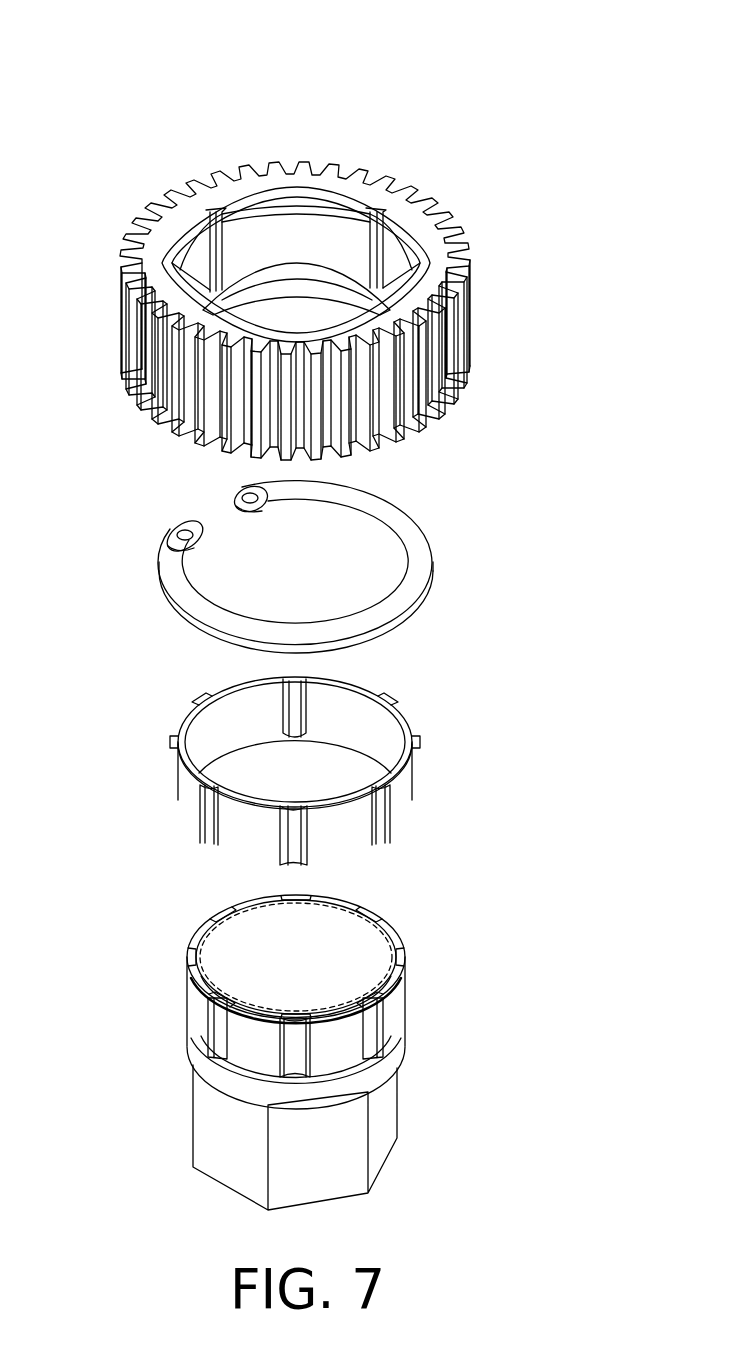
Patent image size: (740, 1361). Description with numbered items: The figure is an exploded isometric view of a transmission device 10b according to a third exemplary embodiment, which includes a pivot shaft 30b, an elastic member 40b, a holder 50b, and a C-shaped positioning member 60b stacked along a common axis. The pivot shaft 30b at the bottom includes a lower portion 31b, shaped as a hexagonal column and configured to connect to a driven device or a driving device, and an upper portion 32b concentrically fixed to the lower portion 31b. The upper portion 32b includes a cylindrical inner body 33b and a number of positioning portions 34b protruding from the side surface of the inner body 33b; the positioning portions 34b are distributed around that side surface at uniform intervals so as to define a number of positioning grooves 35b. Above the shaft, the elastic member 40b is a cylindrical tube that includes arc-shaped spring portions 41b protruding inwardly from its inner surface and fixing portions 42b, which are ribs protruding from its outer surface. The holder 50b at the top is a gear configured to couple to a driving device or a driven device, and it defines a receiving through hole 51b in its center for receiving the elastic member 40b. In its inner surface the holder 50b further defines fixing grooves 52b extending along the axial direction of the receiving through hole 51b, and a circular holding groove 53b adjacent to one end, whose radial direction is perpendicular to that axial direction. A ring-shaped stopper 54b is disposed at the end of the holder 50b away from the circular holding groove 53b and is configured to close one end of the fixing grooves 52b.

The transmission device 10b is at (166, 44).
The holder 50b is at (496, 261).
The receiving through hole 51b is at (293, 235).
The fixing grooves 52b is at (383, 220).
The circular holding groove 53b is at (238, 216).
The ring-shaped stopper 54b is at (306, 272).
The C-shaped positioning member 60b is at (418, 548).
The elastic member 40b is at (165, 720).
The spring portions 41b is at (293, 705).
The fixing portions 42b is at (385, 812).
The pivot shaft 30b is at (165, 968).
The lower portion 31b is at (382, 1120).
The upper portion 32b is at (506, 906).
The cylindrical inner body 33b is at (366, 950).
The positioning portions 34b is at (404, 971).
The positioning grooves 35b is at (373, 1022).